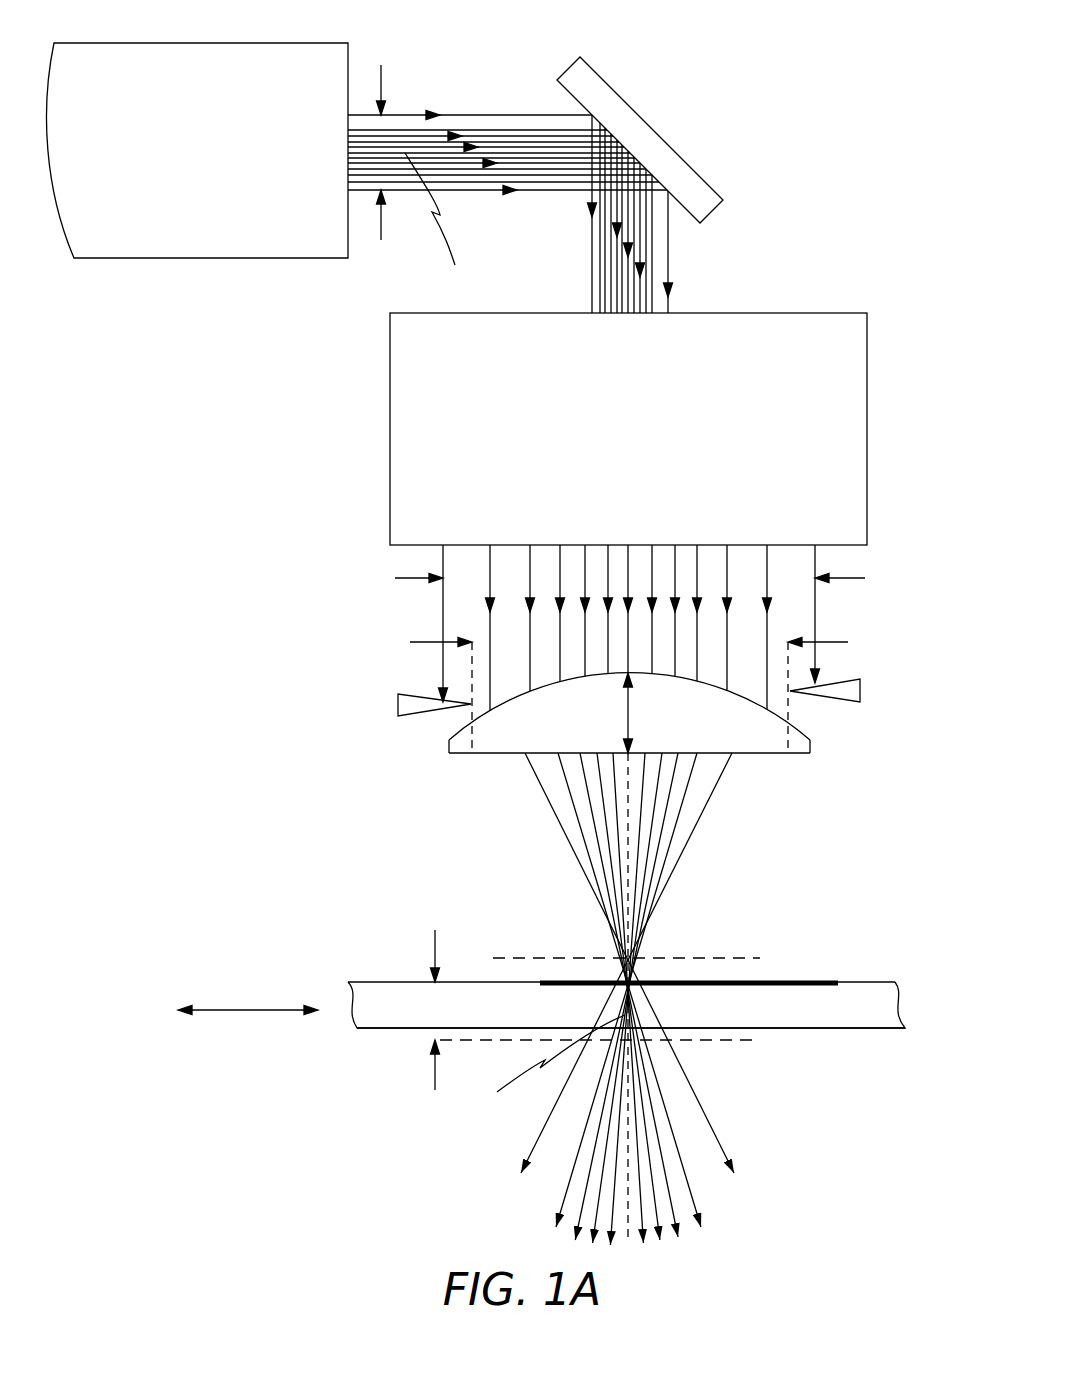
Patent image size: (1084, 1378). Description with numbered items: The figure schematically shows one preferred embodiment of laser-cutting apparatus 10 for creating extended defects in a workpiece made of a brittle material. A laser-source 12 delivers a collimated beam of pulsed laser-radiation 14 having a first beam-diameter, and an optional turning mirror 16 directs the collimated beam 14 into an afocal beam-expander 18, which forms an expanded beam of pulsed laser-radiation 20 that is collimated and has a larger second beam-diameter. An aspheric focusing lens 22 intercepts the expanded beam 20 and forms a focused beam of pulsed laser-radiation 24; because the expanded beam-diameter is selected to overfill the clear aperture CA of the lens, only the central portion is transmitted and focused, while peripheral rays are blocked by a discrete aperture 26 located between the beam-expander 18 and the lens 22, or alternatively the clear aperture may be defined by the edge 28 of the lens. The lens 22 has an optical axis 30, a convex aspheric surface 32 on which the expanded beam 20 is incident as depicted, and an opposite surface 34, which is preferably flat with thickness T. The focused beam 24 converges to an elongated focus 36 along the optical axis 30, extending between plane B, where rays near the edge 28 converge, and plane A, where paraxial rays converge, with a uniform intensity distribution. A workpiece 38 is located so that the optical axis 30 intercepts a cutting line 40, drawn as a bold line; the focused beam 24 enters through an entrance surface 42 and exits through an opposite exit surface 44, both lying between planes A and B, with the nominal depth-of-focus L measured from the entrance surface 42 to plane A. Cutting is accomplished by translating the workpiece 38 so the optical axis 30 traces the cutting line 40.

The laser-cutting apparatus 10 is at (235, 1120).
The laser-source 12 is at (162, 258).
The collimated beam of pulsed laser-radiation 14 is at (512, 105).
The turning mirror 16 is at (668, 152).
The afocal beam-expander 18 is at (395, 404).
The expanded beam of pulsed laser-radiation 20 is at (827, 617).
The aspheric focusing lens 22 is at (630, 956).
The focused beam of pulsed laser-radiation 24 is at (560, 850).
The discrete aperture 26 is at (395, 702).
The edge of aspheric focusing lens 28 is at (448, 748).
The optical axis 30 is at (633, 1165).
The aspheric surface 32 is at (800, 730).
The opposite surface 34 is at (486, 755).
The elongated focus 36 is at (643, 975).
The workpiece 38 is at (547, 995).
The cutting line 40 is at (820, 980).
The entrance surface 42 is at (388, 982).
The exit surface 44 is at (398, 1030).